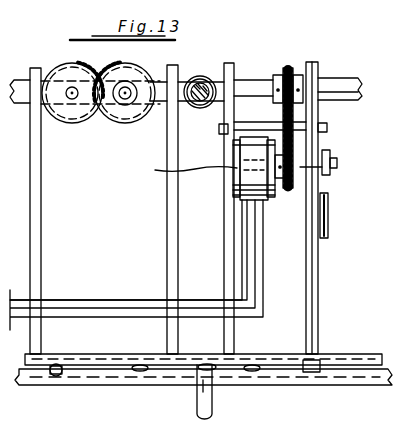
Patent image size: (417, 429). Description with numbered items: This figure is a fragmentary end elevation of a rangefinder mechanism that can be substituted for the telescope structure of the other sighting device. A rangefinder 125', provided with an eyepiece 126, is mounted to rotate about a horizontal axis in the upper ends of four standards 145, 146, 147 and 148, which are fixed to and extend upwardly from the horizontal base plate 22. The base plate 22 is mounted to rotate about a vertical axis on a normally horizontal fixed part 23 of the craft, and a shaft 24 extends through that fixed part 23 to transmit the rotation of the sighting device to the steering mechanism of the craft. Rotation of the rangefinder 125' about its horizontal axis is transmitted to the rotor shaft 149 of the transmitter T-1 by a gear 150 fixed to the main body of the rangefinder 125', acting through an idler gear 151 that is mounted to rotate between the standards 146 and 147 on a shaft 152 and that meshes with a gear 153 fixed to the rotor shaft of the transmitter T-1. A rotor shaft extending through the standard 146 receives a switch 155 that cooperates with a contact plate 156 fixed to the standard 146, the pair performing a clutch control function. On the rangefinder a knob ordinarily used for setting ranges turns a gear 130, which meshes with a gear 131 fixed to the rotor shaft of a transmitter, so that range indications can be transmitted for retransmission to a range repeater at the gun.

The base plate 22 is at (335, 352).
The fixed part 23 is at (326, 380).
The shaft 24 is at (213, 397).
The rangefinder 125' is at (342, 76).
The eyepiece 126 is at (216, 77).
The gear 130 is at (83, 72).
The gear 131 is at (121, 65).
The standard 145 is at (306, 332).
The standard 146 is at (232, 258).
The standard 147 is at (167, 215).
The standard 148 is at (41, 218).
The rotor shaft 149 is at (337, 163).
The gear 150 is at (283, 71).
The idler gear 151 is at (284, 114).
The shaft 152 is at (219, 127).
The gear 153 is at (294, 186).
The switch 155 is at (326, 150).
The contact plate 156 is at (328, 213).
The transmitter T-1 is at (176, 172).